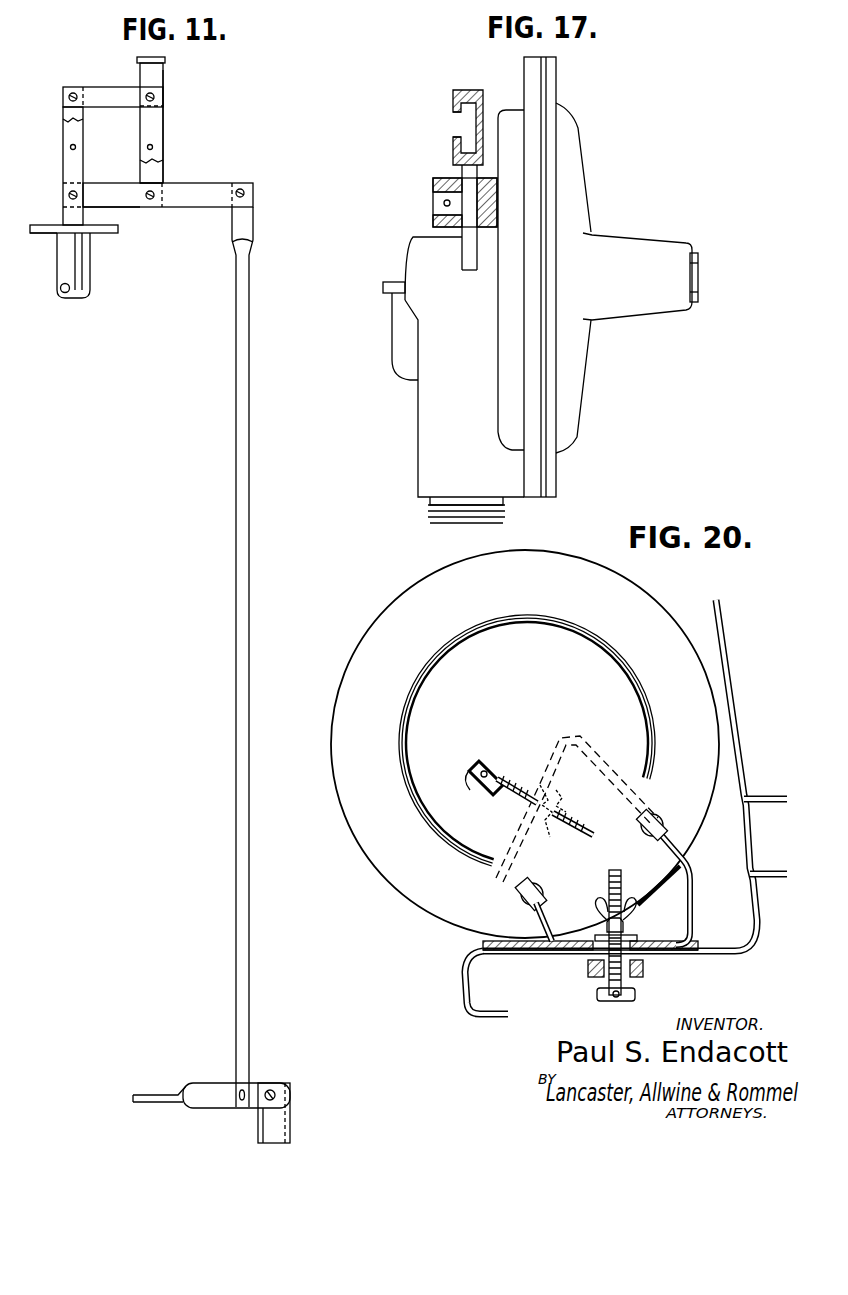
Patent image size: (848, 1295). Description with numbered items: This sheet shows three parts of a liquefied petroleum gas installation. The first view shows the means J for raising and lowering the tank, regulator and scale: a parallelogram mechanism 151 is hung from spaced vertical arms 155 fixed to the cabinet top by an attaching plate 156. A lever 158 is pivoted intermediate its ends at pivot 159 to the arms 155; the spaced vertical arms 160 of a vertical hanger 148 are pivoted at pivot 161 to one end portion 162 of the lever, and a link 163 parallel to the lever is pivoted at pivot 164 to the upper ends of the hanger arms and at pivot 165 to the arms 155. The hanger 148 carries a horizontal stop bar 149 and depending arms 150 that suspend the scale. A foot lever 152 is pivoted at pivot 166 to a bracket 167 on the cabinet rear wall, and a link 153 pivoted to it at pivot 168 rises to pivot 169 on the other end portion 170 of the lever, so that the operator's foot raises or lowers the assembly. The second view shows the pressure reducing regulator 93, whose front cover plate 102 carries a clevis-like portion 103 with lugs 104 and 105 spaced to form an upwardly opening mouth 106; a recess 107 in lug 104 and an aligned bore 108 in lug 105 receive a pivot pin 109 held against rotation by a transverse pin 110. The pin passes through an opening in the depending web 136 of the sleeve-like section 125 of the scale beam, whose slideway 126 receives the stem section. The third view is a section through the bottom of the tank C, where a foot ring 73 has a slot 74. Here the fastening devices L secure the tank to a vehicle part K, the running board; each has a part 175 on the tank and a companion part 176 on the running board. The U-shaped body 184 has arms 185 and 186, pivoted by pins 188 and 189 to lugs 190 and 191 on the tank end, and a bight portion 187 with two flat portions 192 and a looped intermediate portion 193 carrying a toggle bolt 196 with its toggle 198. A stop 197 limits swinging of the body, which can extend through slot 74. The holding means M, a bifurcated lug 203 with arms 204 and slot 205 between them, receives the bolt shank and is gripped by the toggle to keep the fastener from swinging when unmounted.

In FIG. 11, the vertical hanger 148 is at (62, 222).
In FIG. 11, the horizontal stop bar 149 is at (32, 234).
In FIG. 11, the depending arms 150 is at (70, 297).
In FIG. 11, the parallelogram mechanism 151 is at (165, 92).
In FIG. 11, the foot lever 152 is at (195, 1084).
In FIG. 11, the link 153 is at (234, 670).
In FIG. 11, the spaced vertical arms 155 is at (160, 125).
In FIG. 11, the attaching plate 156 is at (138, 58).
In FIG. 11, the lever 158 is at (207, 184).
In FIG. 11, the pivot 159 is at (150, 208).
In FIG. 11, the spaced vertical arms of hanger 160 is at (63, 160).
In FIG. 11, the pivot 161 is at (76, 192).
In FIG. 11, the end portion of lever 162 is at (97, 200).
In FIG. 11, the link 163 is at (100, 92).
In FIG. 11, the pivot 164 is at (69, 98).
In FIG. 11, the pivot 165 is at (155, 97).
In FIG. 11, the pivot 166 is at (273, 1092).
In FIG. 11, the bracket 167 is at (283, 1118).
In FIG. 11, the pivot 168 is at (240, 1098).
In FIG. 11, the pivot 169 is at (245, 208).
In FIG. 11, the end portion of lever 170 is at (246, 193).
In FIG. 11, the means for raising and lowering the tank J is at (165, 180).
In FIG. 17, the pressure reducing regulator 93 is at (556, 455).
In FIG. 17, the front cover plate 102 is at (428, 402).
In FIG. 17, the clevis-like portion 103 is at (467, 246).
In FIG. 17, the lug 104 is at (497, 181).
In FIG. 17, the lug 105 is at (437, 178).
In FIG. 17, the mouth 106 is at (472, 240).
In FIG. 17, the recess 107 is at (497, 196).
In FIG. 17, the bore 108 is at (437, 192).
In FIG. 17, the pivot pin 109 is at (437, 208).
In FIG. 17, the transverse pin 110 is at (444, 203).
In FIG. 17, the sleeve-like section 125 is at (484, 90).
In FIG. 17, the slideway 126 is at (466, 106).
In FIG. 17, the depending web 136 is at (457, 158).
In FIG. 20, the tank C is at (383, 608).
In FIG. 20, the foot ring 73 is at (400, 746).
In FIG. 20, the slot 74 is at (493, 868).
In FIG. 20, the fastener part carried by tank 175 is at (682, 812).
In FIG. 20, the fastener part carried by running board 176 is at (585, 955).
In FIG. 20, the body 184 is at (535, 952).
In FIG. 20, the arm 185 is at (691, 872).
In FIG. 20, the arm 186 is at (561, 912).
In FIG. 20, the bight portion 187 is at (552, 953).
In FIG. 20, the pin 188 is at (685, 746).
In FIG. 20, the pin 189 is at (515, 904).
In FIG. 20, the lug 190 is at (648, 816).
In FIG. 20, the lug 191 is at (557, 861).
In FIG. 20, the flat portions 192 is at (603, 932).
In FIG. 20, the looped intermediate portion 193 is at (606, 898).
In FIG. 20, the toggle bolt 196 is at (614, 870).
In FIG. 20, the stop 197 is at (545, 924).
In FIG. 20, the toggle 198 is at (635, 995).
In FIG. 20, the bifurcated lug 203 is at (505, 772).
In FIG. 20, the arms 204 is at (483, 767).
In FIG. 20, the slot 205 is at (485, 786).
In FIG. 20, the vehicle part K is at (659, 892).
In FIG. 20, the fastening devices L is at (698, 936).
In FIG. 20, the holding means M is at (505, 762).